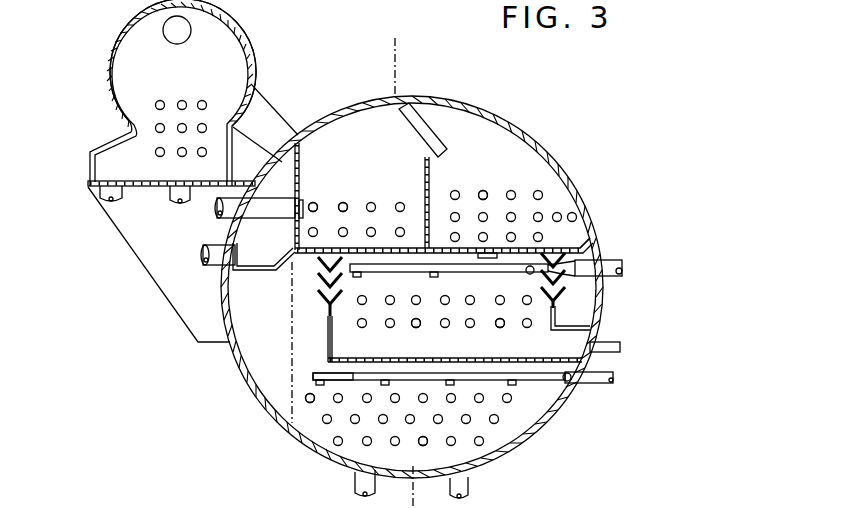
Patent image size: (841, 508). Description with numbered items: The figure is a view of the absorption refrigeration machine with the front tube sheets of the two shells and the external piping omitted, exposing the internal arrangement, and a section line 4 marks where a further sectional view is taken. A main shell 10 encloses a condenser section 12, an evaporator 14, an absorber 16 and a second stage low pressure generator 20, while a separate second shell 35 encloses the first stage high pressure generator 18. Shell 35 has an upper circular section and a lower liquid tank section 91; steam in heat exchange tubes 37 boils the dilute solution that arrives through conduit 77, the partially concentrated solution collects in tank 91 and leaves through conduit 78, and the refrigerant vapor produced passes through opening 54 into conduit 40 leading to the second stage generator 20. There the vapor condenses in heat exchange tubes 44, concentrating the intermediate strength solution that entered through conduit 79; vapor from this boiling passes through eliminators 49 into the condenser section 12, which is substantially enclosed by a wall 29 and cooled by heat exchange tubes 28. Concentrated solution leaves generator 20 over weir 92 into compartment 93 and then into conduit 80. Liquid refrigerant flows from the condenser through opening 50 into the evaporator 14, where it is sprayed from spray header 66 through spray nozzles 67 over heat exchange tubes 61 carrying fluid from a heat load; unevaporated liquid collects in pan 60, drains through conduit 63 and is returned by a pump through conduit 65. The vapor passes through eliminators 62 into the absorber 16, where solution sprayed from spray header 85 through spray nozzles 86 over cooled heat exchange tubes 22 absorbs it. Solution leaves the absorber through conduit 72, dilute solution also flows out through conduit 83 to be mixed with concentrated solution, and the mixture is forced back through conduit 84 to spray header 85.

The section line 4- 4 is at (395, 38).
The shell 10 is at (542, 136).
The condenser section 12 is at (487, 164).
The evaporator 14 is at (541, 356).
The absorber 16 is at (522, 442).
The first stage high pressure generator 18 is at (139, 84).
The second stage low pressure generator 20 is at (366, 156).
The heat exchange tubes 22 is at (306, 398).
The heat exchange tubes 28 is at (484, 192).
The wall 29 is at (546, 249).
The second shell 35 is at (234, 34).
The heat exchange tubes 37 is at (155, 106).
The conduit 40 is at (272, 122).
The heat exchange tubes 44 is at (345, 205).
The eliminators 49 is at (420, 118).
The opening 50 is at (520, 277).
The opening 54 is at (183, 32).
The pan 60 is at (343, 359).
The heat exchange tubes 61 is at (500, 328).
The eliminators 62 is at (318, 282).
The conduit 63 is at (606, 344).
The conduit 65 is at (609, 262).
The spray header 66 is at (522, 281).
The spray nozzles 67 is at (432, 276).
The conduit 72 is at (360, 489).
The conduit 77 is at (181, 207).
The conduit 78 is at (108, 201).
The conduit 79 is at (218, 209).
The conduit 80 is at (220, 263).
The conduit 83 is at (457, 487).
The conduit 84 is at (596, 386).
The spray header 85 is at (565, 381).
The spray nozzles 86 is at (320, 381).
The liquid tank section 91 is at (136, 172).
The weir 92 is at (320, 228).
The compartment 93 is at (263, 257).